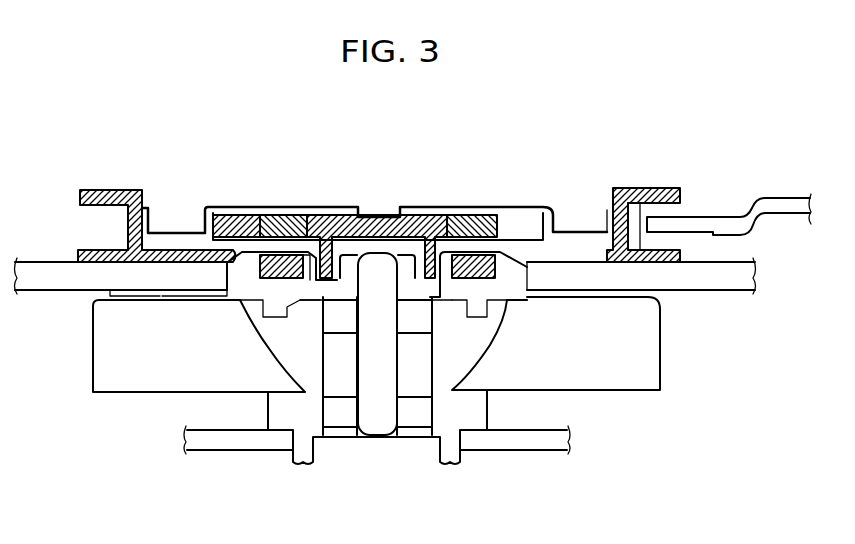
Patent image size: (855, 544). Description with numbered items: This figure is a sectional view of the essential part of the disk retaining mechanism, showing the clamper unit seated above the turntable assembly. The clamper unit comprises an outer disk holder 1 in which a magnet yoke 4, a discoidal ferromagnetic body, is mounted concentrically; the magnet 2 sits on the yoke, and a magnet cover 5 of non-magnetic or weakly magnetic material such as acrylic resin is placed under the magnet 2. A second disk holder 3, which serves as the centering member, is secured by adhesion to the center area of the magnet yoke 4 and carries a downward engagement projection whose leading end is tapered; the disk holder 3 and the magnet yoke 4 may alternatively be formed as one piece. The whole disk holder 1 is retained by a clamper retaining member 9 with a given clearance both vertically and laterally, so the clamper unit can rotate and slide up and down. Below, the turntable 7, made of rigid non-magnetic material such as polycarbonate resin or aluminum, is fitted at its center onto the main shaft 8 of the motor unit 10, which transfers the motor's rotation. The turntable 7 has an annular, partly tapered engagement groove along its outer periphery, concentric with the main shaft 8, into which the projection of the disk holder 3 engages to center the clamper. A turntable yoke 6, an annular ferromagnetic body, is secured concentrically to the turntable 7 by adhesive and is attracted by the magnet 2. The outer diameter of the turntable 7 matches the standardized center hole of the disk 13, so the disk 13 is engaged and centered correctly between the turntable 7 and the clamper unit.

The disk holder 1 is at (663, 188).
The magnet 2 is at (479, 230).
The disk holder 3 is at (420, 232).
The magnet yoke 4 is at (540, 205).
The magnet cover 5 is at (243, 233).
The turntable yoke 6 is at (296, 270).
The turntable 7 is at (247, 283).
The main shaft 8 is at (377, 423).
The clamper retaining member 9 is at (713, 225).
The motor unit 10 is at (607, 368).
The disk 13 is at (697, 277).